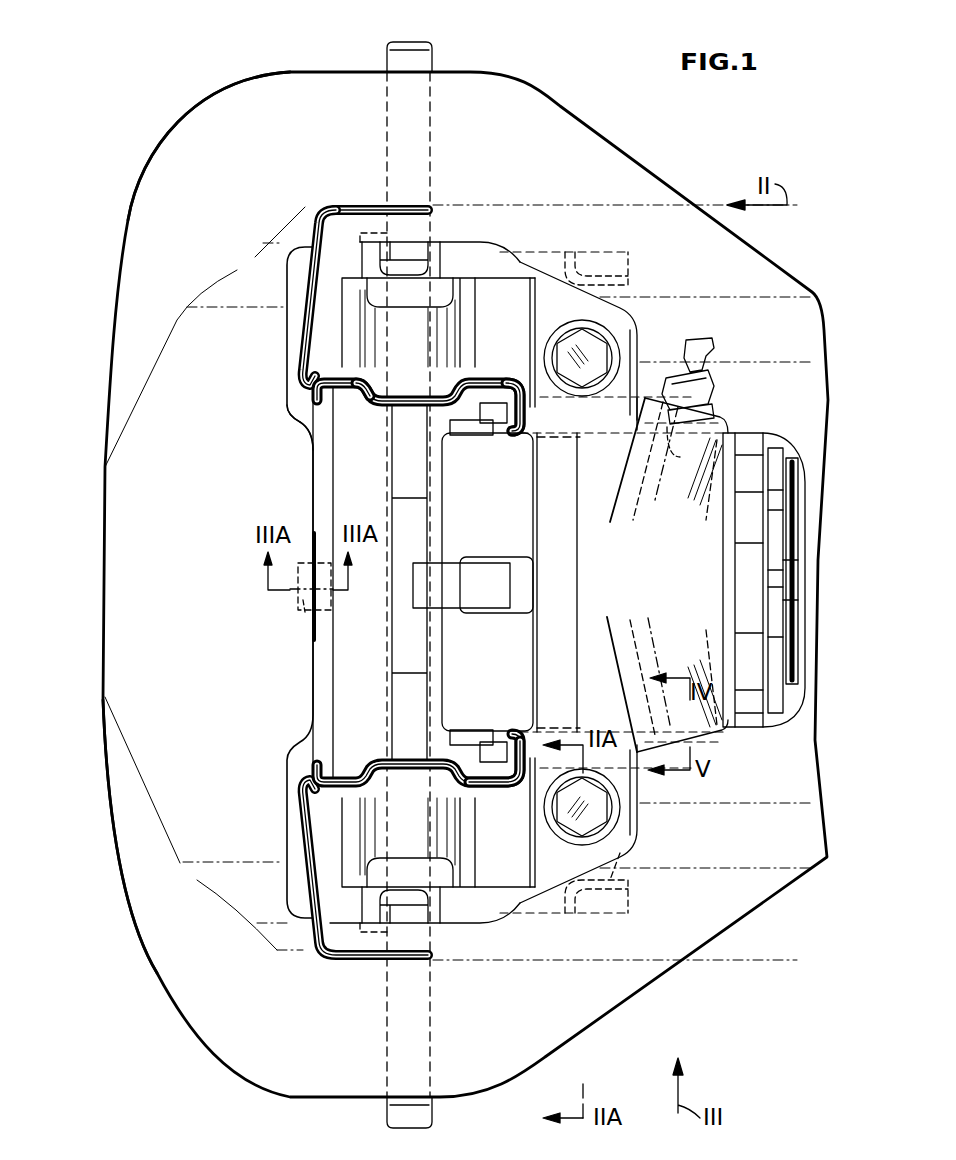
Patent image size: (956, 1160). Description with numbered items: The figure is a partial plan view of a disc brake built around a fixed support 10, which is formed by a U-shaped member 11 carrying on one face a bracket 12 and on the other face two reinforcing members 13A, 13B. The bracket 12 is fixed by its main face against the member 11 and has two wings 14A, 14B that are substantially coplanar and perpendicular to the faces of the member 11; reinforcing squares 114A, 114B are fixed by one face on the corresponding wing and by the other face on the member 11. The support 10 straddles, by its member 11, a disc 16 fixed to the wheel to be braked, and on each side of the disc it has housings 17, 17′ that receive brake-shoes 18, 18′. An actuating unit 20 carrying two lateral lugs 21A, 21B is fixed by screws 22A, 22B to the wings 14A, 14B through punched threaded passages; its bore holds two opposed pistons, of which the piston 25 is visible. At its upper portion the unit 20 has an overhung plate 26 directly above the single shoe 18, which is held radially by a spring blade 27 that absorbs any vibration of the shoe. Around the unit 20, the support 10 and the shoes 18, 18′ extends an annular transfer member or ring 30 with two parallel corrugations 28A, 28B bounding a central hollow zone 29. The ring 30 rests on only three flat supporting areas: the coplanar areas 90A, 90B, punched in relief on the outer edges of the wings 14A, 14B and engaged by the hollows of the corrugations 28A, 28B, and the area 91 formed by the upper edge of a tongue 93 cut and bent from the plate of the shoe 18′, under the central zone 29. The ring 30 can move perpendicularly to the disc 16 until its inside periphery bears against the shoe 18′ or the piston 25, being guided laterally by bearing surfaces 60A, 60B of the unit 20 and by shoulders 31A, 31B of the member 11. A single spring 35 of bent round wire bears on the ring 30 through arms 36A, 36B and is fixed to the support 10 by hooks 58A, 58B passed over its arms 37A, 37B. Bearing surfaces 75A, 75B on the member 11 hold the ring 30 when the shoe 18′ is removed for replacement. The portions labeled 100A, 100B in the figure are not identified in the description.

The fixed support 10 is at (483, 861).
The U-shaped member 11 is at (417, 840).
The bracket 12 is at (488, 265).
The reinforcing member 13A is at (350, 318).
The reinforcing member 13B is at (347, 845).
The wing 14A is at (570, 317).
The wing 14B is at (568, 875).
The disc 16 is at (435, 56).
The housing 17 is at (478, 395).
The housing 17′ is at (303, 442).
The brake-shoe 18 is at (527, 415).
The brake-shoe 18′ is at (307, 455).
The actuating unit 20 is at (755, 428).
The lug 21A is at (617, 417).
The lug 21B is at (622, 755).
The screw 22A is at (597, 353).
The screw 22B is at (605, 803).
The piston 25 is at (791, 472).
The overhung plate 26 is at (502, 671).
The spring blade 27 is at (418, 560).
The corrugation 28A is at (282, 290).
The corrugation 28B is at (278, 902).
The central hollow zone 29 is at (173, 592).
The annular transfer member 30 is at (565, 108).
The shoulder 31A is at (450, 245).
The shoulder 31B is at (448, 930).
The spring 35 is at (319, 225).
The arm 36A is at (363, 207).
The arm 36B is at (370, 960).
The arm 37A is at (418, 389).
The arm 37B is at (385, 775).
The hook 58A is at (368, 372).
The hook 58B is at (510, 797).
The bearing surface 60A is at (646, 460).
The bearing surface 60B is at (663, 680).
The bearing surface 75A is at (372, 247).
The bearing surface 75B is at (370, 927).
The supporting area 90A is at (608, 276).
The supporting area 90B is at (608, 893).
The supporting area 91 is at (300, 590).
The tongue 93 is at (303, 600).
The upper shield arm 100A is at (218, 175).
The lower shield arm 100B is at (237, 1017).
The reinforcing square 114A is at (492, 290).
The reinforcing square 114B is at (480, 885).